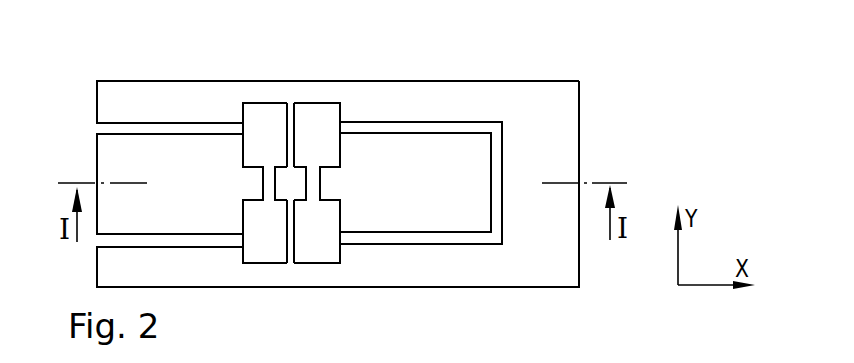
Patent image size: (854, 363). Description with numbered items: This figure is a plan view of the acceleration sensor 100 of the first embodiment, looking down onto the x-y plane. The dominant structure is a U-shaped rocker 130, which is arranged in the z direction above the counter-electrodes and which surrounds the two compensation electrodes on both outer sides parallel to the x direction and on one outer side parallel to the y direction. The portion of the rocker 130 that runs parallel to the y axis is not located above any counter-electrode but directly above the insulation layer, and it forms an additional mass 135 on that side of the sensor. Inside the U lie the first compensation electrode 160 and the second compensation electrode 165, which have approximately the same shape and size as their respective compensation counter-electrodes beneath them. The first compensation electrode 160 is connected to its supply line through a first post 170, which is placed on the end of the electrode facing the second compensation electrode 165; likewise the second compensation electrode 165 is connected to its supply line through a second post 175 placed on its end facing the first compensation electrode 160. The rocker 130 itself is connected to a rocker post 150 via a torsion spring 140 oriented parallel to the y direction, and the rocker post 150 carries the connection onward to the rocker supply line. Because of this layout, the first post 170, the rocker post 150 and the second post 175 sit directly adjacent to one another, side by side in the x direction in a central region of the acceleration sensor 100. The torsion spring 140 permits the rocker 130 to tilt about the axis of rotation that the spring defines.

The acceleration sensor 100 is at (646, 70).
The rocker 130 is at (163, 96).
The additional mass 135 is at (558, 133).
The torsion spring 140 is at (291, 113).
The rocker post 150 is at (293, 185).
The first compensation electrode 160 is at (118, 161).
The second compensation electrode 165 is at (444, 98).
The first post 170 is at (253, 187).
The second post 175 is at (330, 190).